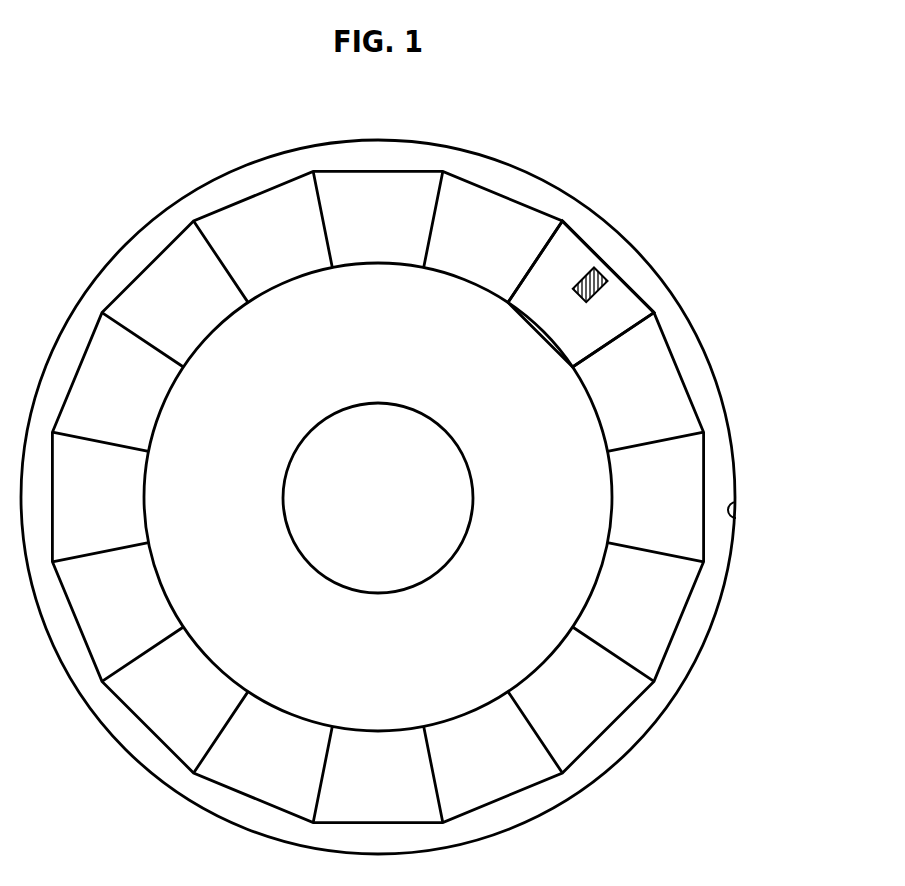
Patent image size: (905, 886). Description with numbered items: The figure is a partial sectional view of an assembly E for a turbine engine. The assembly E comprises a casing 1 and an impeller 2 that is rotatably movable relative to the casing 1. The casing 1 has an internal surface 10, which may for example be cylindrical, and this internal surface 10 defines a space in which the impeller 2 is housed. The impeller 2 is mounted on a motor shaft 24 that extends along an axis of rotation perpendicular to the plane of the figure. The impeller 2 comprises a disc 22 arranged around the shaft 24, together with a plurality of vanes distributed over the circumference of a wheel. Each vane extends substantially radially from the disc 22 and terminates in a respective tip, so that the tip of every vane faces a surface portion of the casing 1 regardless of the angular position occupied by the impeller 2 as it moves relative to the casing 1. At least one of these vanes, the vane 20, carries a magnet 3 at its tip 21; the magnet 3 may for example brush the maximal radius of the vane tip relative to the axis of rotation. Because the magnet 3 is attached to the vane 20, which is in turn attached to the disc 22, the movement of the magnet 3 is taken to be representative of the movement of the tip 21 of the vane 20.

The assembly for turbine engine E is at (552, 113).
The casing 1 is at (122, 232).
The impeller 2 is at (72, 362).
The magnet 3 is at (600, 280).
The internal surface 10 is at (737, 518).
The vane 20 is at (607, 313).
The tip 21 is at (590, 247).
The disc 22 is at (515, 428).
The motor shaft 24 is at (430, 498).